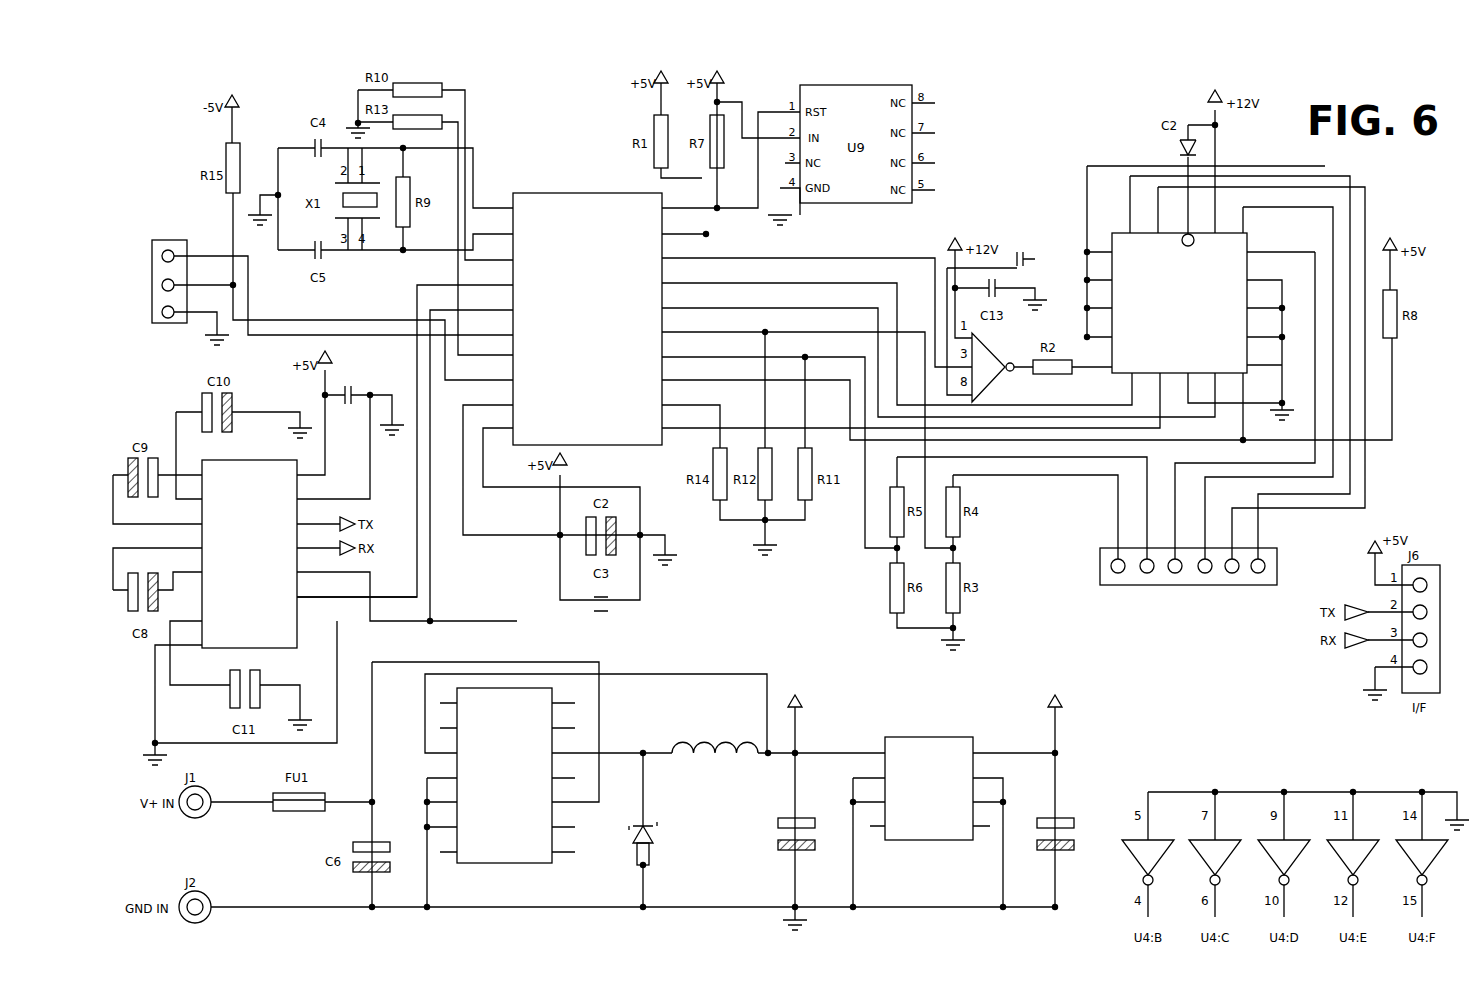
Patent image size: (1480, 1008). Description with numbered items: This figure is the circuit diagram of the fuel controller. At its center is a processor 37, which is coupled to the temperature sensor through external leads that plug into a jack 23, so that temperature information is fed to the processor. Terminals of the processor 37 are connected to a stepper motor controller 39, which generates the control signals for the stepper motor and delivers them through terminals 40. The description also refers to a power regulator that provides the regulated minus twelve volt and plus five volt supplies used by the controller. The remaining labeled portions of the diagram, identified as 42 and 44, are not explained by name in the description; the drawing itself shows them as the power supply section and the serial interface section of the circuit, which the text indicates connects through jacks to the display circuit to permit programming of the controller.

The jack 23 is at (150, 268).
The processor 37 is at (577, 163).
The stepper motor controller 39 is at (1115, 156).
The terminals 40 is at (1068, 572).
The power supply circuit 42 is at (616, 662).
The serial interface U3 44 is at (348, 635).